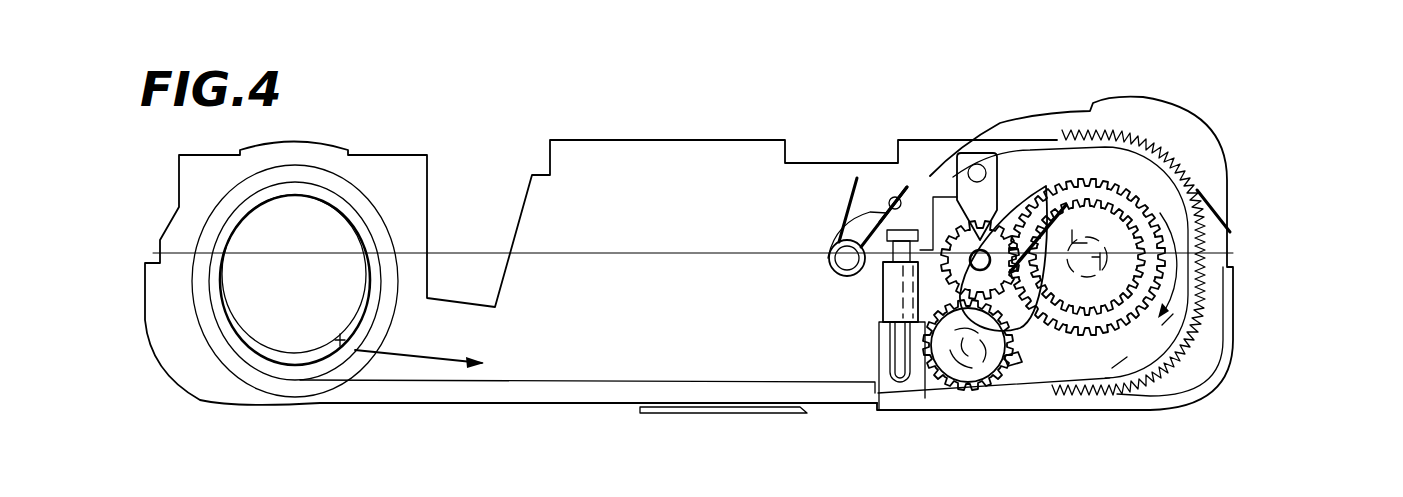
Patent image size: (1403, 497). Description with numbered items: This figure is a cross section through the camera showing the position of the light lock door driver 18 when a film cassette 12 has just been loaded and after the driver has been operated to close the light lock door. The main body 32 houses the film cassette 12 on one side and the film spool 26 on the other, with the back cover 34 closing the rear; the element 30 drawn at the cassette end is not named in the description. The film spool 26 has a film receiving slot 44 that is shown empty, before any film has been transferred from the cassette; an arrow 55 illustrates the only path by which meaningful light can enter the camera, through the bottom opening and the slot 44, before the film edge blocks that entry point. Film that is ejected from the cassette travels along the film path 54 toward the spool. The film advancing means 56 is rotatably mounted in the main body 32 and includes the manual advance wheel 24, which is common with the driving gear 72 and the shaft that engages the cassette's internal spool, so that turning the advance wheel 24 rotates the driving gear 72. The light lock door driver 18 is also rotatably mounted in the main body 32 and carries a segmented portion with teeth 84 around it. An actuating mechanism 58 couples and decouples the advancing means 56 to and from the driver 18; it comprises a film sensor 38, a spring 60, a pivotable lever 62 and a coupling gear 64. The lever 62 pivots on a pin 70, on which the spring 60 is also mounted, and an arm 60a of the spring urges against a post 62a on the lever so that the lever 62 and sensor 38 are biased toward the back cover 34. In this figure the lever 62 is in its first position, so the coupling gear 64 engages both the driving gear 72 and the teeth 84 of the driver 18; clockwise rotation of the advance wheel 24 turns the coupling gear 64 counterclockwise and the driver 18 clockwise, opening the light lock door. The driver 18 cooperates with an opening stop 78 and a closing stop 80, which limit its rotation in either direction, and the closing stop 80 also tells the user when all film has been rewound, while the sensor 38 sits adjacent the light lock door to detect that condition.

The film cassette 12 is at (1040, 187).
The light lock door driver 18 is at (960, 383).
The advance wheel 24 is at (1180, 253).
The film spool 26 is at (230, 325).
The film cartridge 30 is at (317, 215).
The main body 32 is at (580, 140).
The back cover 34 is at (600, 405).
The film sensor 38 is at (897, 303).
The film receiving slot 44 is at (338, 340).
The film path 54 is at (290, 388).
The arrow 55 is at (436, 363).
The film advancing means 56 is at (1163, 140).
The actuating mechanism 58 is at (817, 212).
The spring 60 is at (843, 210).
The arm 60a is at (877, 193).
The pivotable lever 62 is at (955, 226).
The post 62a is at (886, 197).
The coupling gear 64 is at (1048, 328).
The pin 70 is at (830, 250).
The driving gear 72 is at (1123, 292).
The opening stop 78 is at (1003, 390).
The closing stop 80 is at (903, 412).
The teeth 84 is at (948, 383).